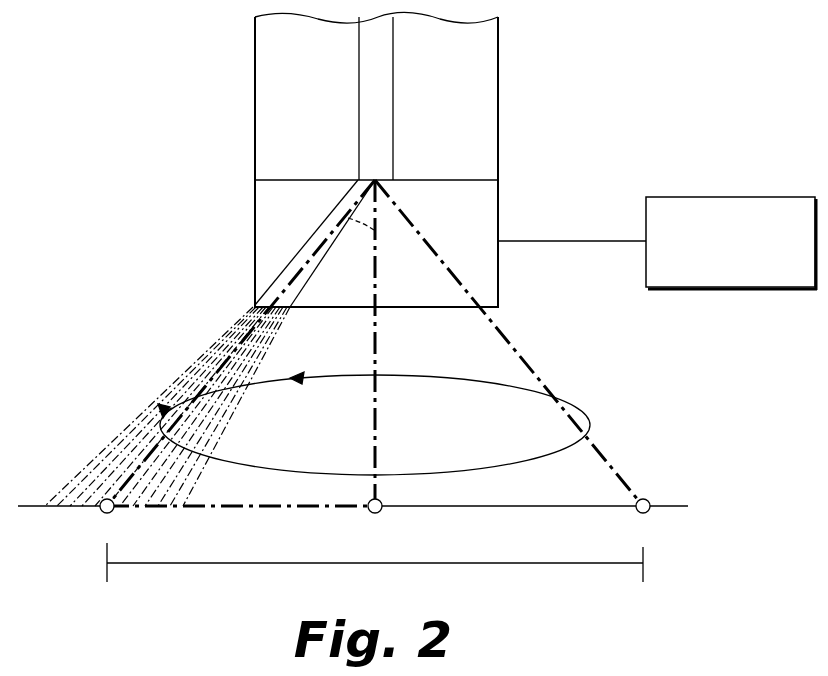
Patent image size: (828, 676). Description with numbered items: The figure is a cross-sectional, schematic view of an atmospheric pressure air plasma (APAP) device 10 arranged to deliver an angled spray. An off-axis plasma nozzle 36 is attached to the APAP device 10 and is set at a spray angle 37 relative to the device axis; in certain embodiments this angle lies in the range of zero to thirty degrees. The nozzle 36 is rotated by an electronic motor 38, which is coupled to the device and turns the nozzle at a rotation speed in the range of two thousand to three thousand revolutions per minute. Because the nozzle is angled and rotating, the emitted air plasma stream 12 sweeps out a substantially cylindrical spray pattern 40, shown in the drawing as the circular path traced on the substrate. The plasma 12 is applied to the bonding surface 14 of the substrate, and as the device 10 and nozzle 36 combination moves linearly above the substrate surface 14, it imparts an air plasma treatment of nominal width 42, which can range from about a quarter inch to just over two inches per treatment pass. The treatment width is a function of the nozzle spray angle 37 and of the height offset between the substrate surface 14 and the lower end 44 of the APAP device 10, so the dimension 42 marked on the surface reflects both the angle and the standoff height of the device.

The atmospheric pressure air plasma (APAP) device 10 is at (254, 100).
The air plasma stream 12 is at (160, 398).
The bonding surface 14 is at (622, 507).
The off-axis plasma nozzle 36 is at (254, 242).
The spray angle 37 is at (360, 224).
The electronic motor 38 is at (730, 197).
The cylindrical spray pattern 40 is at (590, 423).
The nominal width 42 is at (187, 563).
The lower end 44 is at (443, 180).